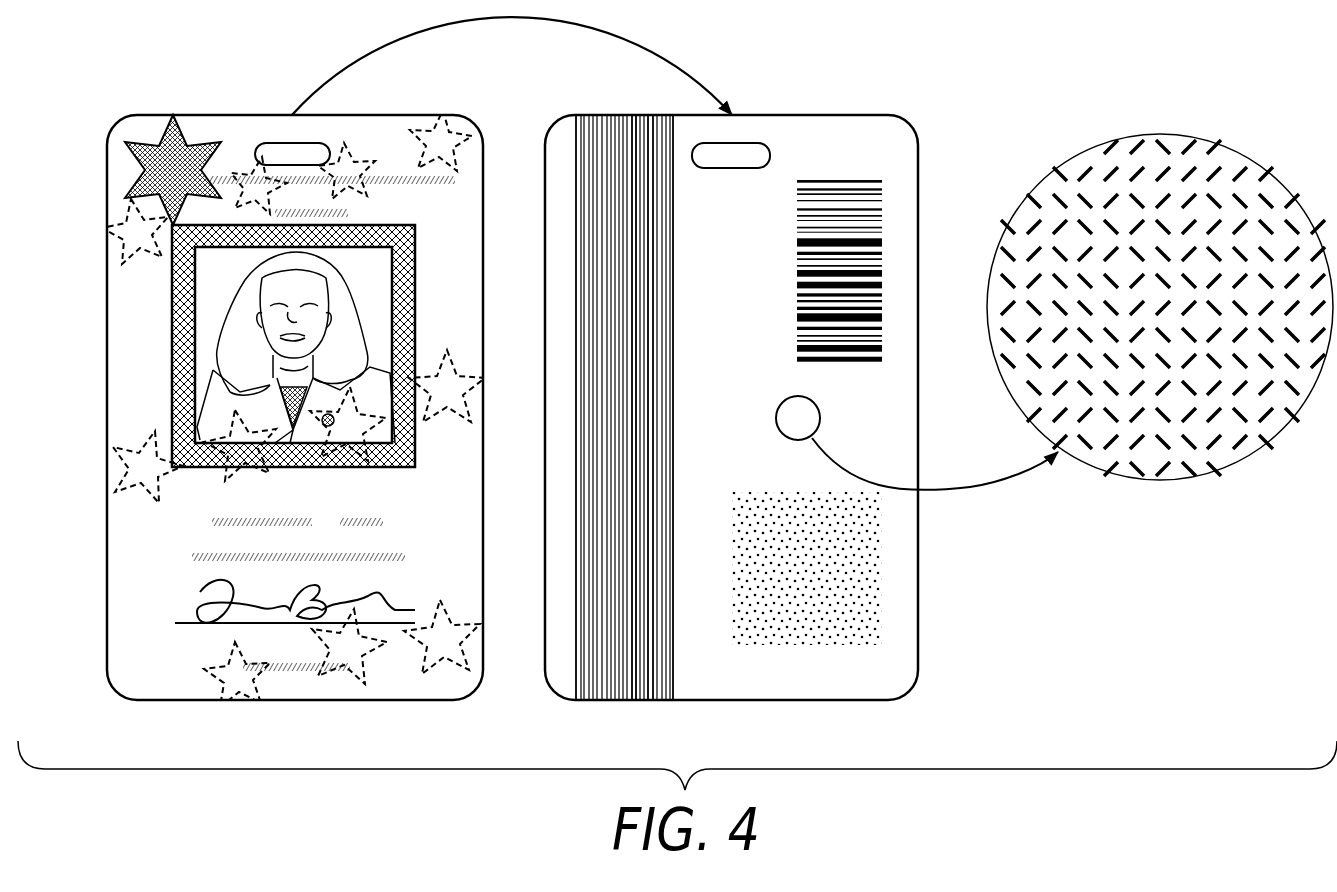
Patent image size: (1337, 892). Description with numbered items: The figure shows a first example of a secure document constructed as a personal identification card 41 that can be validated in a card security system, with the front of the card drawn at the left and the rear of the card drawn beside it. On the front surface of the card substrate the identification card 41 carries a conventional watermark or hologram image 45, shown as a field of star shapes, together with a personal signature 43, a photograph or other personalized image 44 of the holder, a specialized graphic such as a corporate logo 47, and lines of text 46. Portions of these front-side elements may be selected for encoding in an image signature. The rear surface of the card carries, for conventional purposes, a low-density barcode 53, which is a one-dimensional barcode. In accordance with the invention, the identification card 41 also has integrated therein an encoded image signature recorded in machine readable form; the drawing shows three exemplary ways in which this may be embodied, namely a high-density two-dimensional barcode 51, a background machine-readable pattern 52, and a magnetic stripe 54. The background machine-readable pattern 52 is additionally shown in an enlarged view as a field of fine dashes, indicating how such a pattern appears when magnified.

The identification card 41 is at (240, 115).
The personal signature 43 is at (200, 592).
The photograph or other personalized image 44 is at (172, 372).
The watermark or hologram image 45 is at (118, 198).
The text 46 is at (192, 557).
The corporate logo 47 is at (167, 142).
The high-density barcode 51 is at (882, 585).
The background machine-readable pattern 52 is at (820, 418).
The low-density barcode 53 is at (882, 283).
The magnetic stripe 54 is at (673, 447).